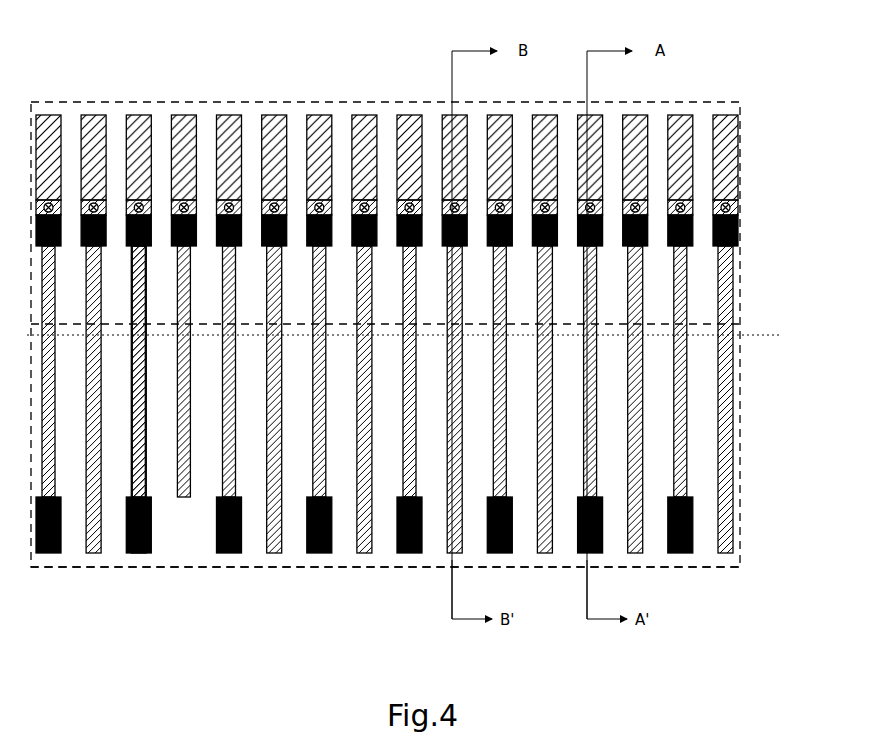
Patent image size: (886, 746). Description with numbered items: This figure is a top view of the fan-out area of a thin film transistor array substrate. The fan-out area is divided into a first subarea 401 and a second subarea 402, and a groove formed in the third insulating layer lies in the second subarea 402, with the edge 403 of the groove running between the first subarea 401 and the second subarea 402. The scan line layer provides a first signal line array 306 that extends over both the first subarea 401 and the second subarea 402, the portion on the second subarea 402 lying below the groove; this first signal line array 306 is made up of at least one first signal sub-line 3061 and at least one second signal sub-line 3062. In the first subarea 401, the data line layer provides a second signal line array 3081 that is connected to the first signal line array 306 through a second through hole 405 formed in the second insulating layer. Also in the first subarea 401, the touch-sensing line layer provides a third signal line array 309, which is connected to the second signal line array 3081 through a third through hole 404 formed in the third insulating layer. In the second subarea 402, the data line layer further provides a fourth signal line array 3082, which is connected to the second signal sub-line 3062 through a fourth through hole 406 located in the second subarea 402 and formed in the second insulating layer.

The first subarea 401 is at (175, 101).
The second subarea 402 is at (310, 568).
The edge of the groove 403 is at (763, 334).
The third through hole 404 is at (308, 202).
The second through hole 405 is at (332, 226).
The fourth through hole 406 is at (330, 510).
The third signal line array 309 is at (745, 115).
The second signal line array 3081 is at (745, 215).
The fourth signal line array 3082 is at (768, 500).
The first signal line array 306 is at (745, 250).
The first signal sub-line 3061 is at (142, 480).
The second signal sub-line 3062 is at (88, 555).